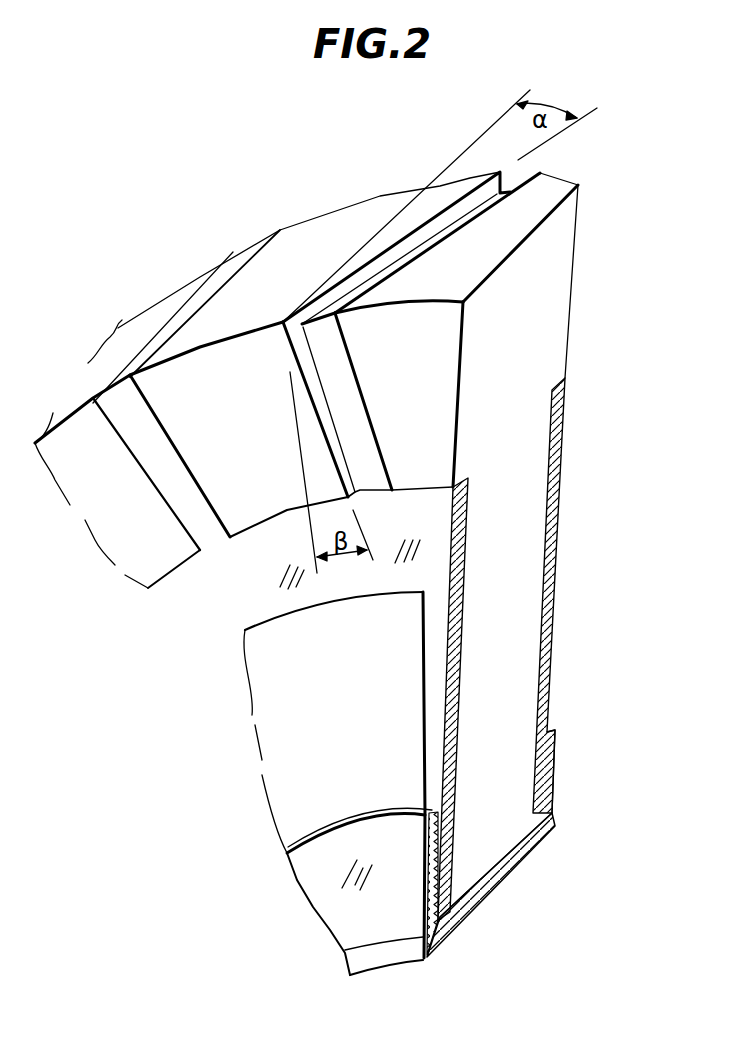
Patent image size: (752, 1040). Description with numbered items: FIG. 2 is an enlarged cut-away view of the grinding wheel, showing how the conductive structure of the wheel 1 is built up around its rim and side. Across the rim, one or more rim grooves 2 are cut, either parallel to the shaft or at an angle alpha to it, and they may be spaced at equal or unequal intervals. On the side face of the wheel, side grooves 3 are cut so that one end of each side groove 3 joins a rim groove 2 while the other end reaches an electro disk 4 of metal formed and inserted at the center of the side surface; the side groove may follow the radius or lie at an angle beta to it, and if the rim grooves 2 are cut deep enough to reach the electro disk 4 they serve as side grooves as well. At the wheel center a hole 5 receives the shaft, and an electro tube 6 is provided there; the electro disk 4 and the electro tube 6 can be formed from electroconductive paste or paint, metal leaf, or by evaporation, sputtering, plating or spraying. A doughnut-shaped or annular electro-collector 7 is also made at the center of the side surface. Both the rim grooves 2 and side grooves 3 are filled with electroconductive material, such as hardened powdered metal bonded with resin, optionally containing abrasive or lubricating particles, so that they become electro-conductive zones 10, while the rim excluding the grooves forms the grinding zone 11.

The segment body 1 is at (357, 197).
The rim groove 2 is at (457, 222).
The side groove 3 is at (352, 403).
The electro disk 4 is at (558, 472).
The hole 5 is at (472, 917).
The electro tube 6 is at (523, 858).
The electro-collector 7 is at (543, 767).
The electro-conductive zone 10 is at (208, 285).
The grinding zone 11 is at (302, 255).